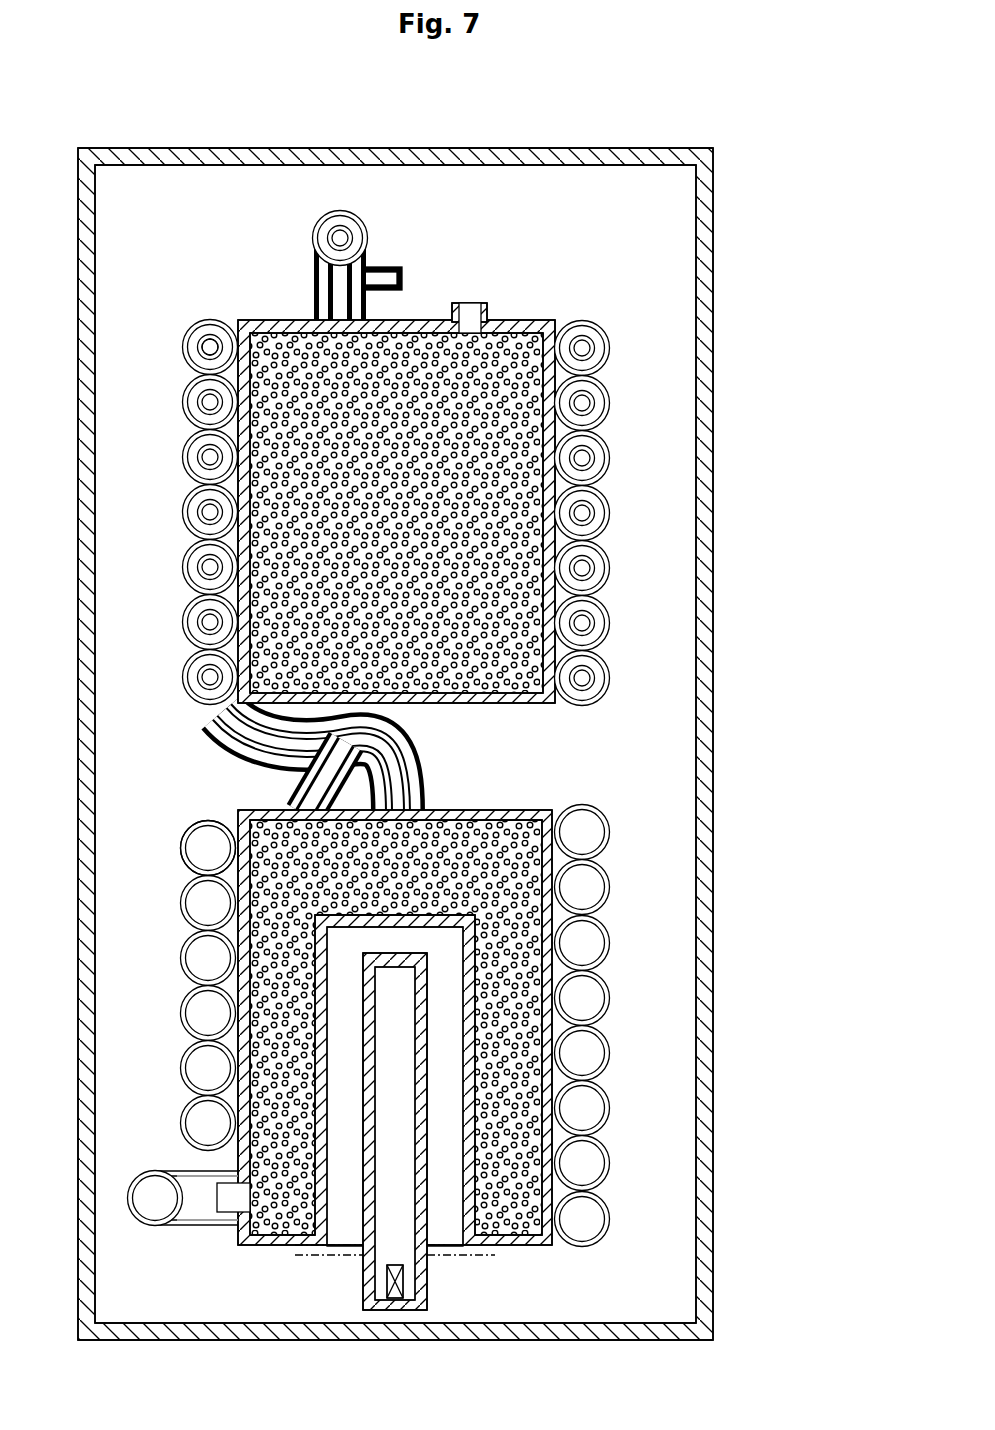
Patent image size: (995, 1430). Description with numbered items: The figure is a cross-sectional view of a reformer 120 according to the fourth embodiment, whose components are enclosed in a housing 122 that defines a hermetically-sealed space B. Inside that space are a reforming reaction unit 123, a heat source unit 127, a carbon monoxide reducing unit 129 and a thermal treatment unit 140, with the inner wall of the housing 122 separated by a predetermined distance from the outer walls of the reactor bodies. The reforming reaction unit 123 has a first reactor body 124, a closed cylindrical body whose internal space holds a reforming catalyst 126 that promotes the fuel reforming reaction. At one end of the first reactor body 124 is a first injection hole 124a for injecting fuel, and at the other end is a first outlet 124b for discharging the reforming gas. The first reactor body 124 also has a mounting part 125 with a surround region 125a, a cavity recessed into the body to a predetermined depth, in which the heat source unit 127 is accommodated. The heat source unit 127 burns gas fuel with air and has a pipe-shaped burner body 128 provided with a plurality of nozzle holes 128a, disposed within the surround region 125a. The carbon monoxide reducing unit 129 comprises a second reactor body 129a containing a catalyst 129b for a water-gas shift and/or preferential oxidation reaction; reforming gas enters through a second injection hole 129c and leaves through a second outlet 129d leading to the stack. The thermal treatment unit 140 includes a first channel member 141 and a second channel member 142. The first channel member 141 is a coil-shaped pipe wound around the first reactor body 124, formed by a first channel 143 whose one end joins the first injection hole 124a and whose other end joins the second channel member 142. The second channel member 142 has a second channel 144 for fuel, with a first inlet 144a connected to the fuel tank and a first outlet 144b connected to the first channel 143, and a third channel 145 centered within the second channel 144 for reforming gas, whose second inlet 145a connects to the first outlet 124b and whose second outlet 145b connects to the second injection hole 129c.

The hermetically-sealed space B is at (185, 185).
The reformer 120 is at (755, 157).
The housing 122 is at (713, 666).
The reforming reaction unit 123 is at (600, 783).
The first reactor body 124 is at (526, 810).
The first injection hole 124a is at (233, 1216).
The first outlet 124b is at (425, 792).
The mounting part 125 is at (350, 1212).
The surround region 125a is at (455, 1085).
The reforming catalyst 126 is at (520, 1237).
The heat source unit 127 is at (352, 1300).
The burner body 128 is at (425, 1250).
The nozzle holes 128a is at (412, 1135).
The carbon monoxide reducing unit 129 is at (528, 305).
The second reactor body 129a is at (417, 320).
The catalyst 129b is at (495, 705).
The second injection hole 129c is at (318, 303).
The second outlet 129d is at (472, 303).
The thermal treatment unit 140 is at (658, 662).
The first channel member 141 is at (185, 827).
The second channel member 142 is at (318, 222).
The first channel 143 is at (183, 851).
The second channel 144 is at (316, 238).
The first inlet 144a is at (393, 268).
The first outlet 144b is at (330, 775).
The third channel 145 is at (318, 280).
The second inlet 145a is at (420, 816).
The second outlet 145b is at (235, 353).